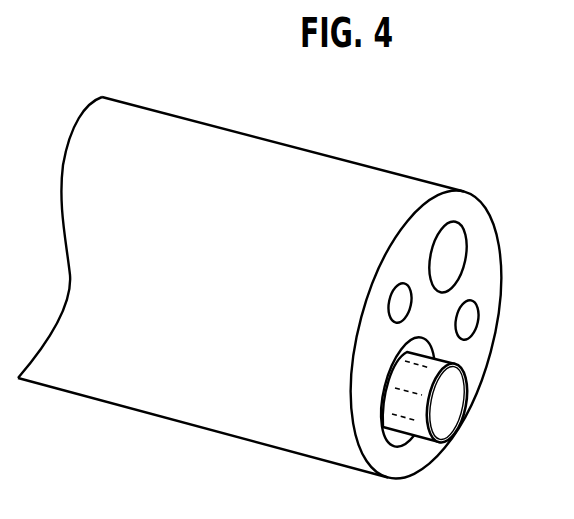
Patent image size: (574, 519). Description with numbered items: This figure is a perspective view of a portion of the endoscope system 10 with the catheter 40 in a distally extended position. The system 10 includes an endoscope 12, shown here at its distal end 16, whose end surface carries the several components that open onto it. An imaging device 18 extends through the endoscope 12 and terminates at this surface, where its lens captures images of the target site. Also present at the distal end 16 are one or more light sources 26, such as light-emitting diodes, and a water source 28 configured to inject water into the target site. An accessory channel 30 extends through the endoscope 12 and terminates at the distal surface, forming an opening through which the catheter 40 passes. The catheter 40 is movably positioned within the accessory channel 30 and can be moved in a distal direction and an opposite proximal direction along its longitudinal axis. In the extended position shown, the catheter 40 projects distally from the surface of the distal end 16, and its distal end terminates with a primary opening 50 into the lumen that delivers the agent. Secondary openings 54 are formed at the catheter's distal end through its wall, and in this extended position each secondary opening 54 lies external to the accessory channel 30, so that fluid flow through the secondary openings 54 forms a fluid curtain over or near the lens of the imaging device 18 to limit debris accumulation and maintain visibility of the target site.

The system 10 is at (283, 268).
The endoscope 12 is at (270, 113).
The distal end 16 is at (175, 98).
The imaging device 18 is at (457, 236).
The light sources 26 is at (393, 290).
The water source 28 is at (480, 260).
The accessory channel 30 is at (460, 421).
The catheter 40 is at (398, 375).
The primary opening 50 is at (449, 395).
The secondary openings 54 is at (413, 423).